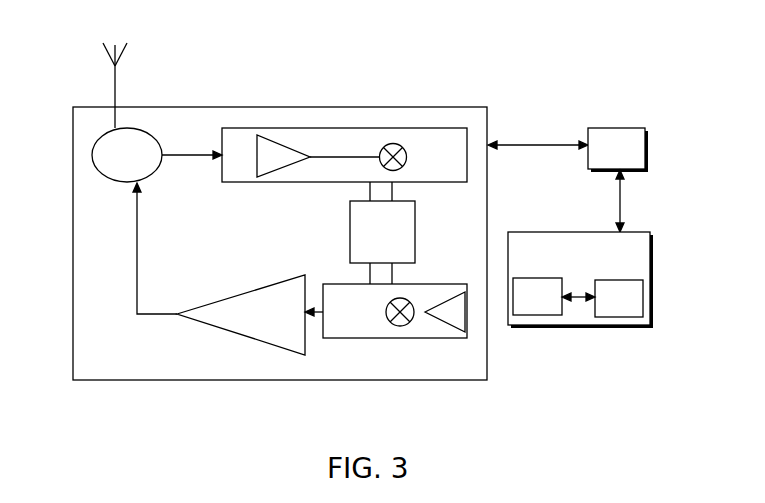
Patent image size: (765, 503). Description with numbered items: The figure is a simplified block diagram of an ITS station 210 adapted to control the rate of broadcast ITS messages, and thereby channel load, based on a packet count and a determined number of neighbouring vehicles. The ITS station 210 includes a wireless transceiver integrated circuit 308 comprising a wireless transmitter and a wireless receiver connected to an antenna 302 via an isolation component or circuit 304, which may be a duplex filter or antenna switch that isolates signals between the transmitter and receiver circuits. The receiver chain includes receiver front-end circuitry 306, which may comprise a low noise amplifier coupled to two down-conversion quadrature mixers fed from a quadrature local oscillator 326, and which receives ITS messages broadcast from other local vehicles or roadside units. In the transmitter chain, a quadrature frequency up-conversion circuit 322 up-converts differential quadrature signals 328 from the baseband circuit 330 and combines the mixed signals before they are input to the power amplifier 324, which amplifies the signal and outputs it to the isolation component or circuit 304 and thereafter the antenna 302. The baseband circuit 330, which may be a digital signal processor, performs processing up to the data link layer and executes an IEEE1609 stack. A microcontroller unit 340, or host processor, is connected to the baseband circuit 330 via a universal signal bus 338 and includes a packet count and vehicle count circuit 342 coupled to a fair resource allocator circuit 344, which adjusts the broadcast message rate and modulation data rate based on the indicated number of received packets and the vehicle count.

The ITS station 210 is at (347, 72).
The antenna 302 is at (114, 88).
The isolation component or circuit 304 is at (145, 165).
The receiver front-end circuitry 306 is at (451, 168).
The wireless transceiver integrated circuit 308 is at (280, 243).
The quadrature frequency up-conversion circuit 322 is at (373, 325).
The power amplifier 324 is at (281, 325).
The quadrature local oscillator 326 is at (401, 242).
The differential quadrature signals 328 is at (570, 142).
The baseband circuit 330 is at (635, 161).
The universal signal bus 338 is at (625, 212).
The microcontroller unit 340 is at (596, 266).
The packet count and vehicle count circuit 342 is at (636, 310).
The fair resource allocator circuit 344 is at (555, 308).